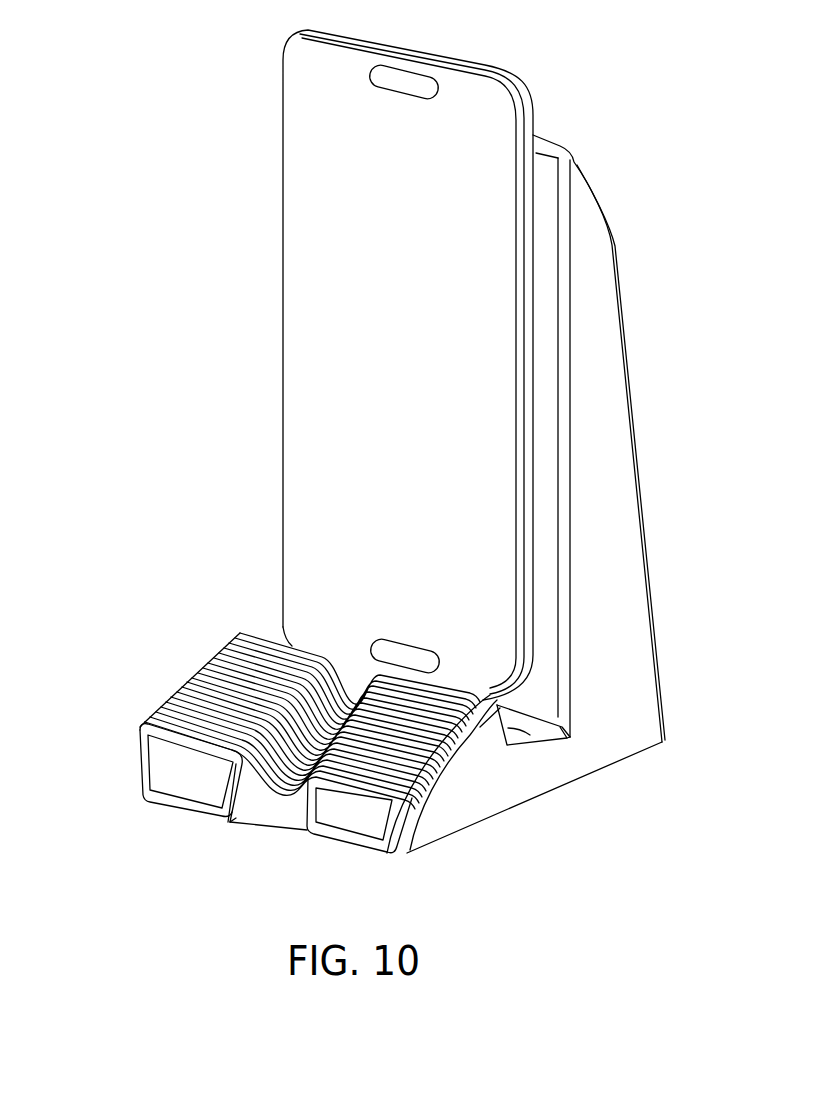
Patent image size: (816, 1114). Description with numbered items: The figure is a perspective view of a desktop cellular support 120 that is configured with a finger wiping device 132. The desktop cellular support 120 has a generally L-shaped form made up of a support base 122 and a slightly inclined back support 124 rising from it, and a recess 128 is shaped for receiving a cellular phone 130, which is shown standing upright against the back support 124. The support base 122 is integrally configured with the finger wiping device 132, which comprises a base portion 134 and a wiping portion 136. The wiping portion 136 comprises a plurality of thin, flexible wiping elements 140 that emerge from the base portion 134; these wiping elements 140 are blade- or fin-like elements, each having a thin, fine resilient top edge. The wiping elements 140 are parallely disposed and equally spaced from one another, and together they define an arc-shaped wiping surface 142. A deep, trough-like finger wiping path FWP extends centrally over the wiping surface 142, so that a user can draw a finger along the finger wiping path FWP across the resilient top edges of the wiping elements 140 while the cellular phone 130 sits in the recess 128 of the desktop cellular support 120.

The desktop cellular support 120 is at (188, 116).
The support base 122 is at (562, 503).
The back support 124 is at (608, 393).
The recess 128 is at (523, 720).
The cellular phone 130 is at (517, 80).
The finger wiping device 132 is at (209, 623).
The base portion 134 is at (465, 767).
The wiping portion 136 is at (198, 665).
The wiping elements 140 is at (165, 712).
The wiping surface 142 is at (325, 765).
The finger wiping path FWP is at (248, 828).